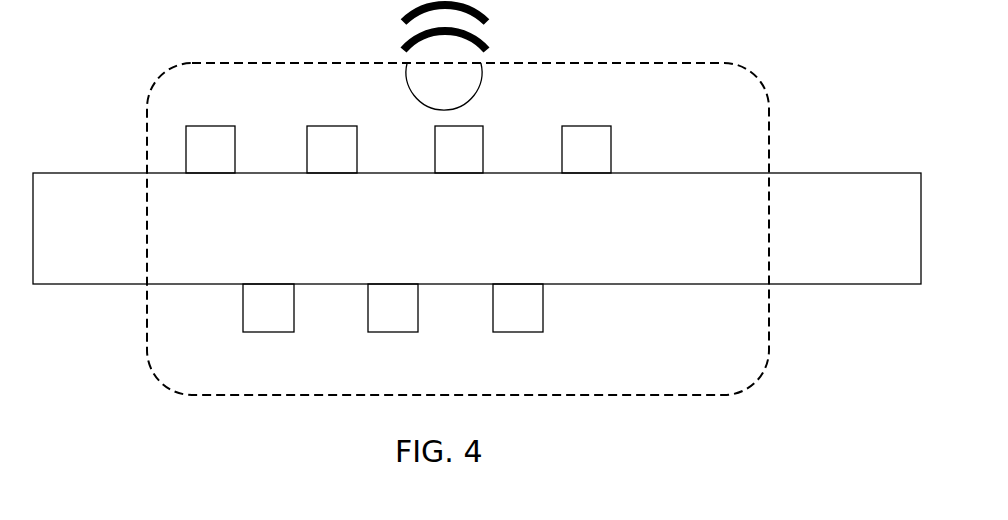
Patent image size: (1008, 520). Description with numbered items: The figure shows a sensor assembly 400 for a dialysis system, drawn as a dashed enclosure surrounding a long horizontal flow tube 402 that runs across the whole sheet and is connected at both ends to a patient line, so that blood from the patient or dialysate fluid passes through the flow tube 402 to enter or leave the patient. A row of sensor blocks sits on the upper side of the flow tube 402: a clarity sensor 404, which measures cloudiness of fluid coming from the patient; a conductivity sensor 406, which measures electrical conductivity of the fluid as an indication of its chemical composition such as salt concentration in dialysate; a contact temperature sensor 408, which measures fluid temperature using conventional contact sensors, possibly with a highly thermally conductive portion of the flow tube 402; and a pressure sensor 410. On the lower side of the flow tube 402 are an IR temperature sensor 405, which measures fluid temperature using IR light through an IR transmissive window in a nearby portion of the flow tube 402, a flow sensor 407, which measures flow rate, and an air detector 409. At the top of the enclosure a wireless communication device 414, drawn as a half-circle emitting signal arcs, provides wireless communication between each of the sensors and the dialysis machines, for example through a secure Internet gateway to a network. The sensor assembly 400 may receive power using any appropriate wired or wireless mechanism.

The sensor assembly 400 is at (695, 125).
The flow tube 402 is at (450, 238).
The clarity sensor 404 is at (226, 160).
The IR temperature sensor 405 is at (284, 315).
The conductivity sensor 406 is at (348, 160).
The flow sensor 407 is at (409, 315).
The contact temperature sensor 408 is at (475, 160).
The air detector 409 is at (534, 315).
The pressure sensor 410 is at (602, 160).
The wireless communication device 414 is at (460, 95).